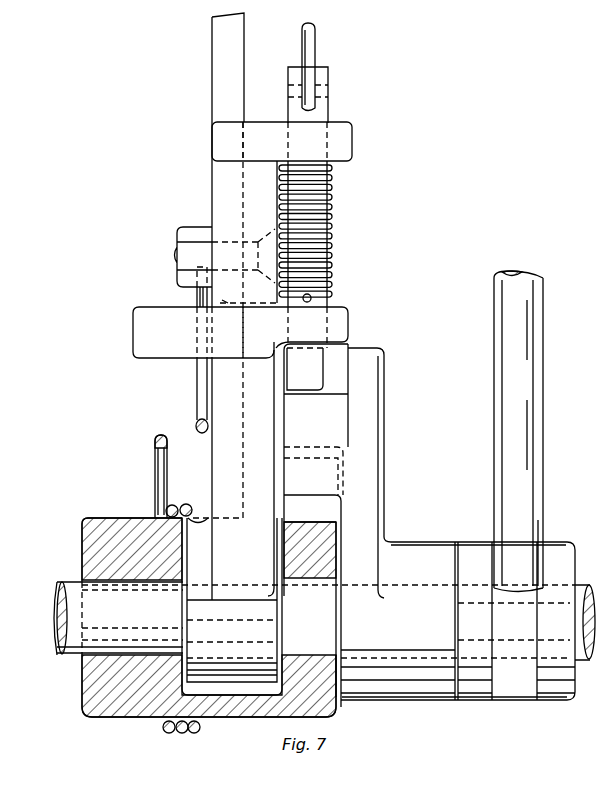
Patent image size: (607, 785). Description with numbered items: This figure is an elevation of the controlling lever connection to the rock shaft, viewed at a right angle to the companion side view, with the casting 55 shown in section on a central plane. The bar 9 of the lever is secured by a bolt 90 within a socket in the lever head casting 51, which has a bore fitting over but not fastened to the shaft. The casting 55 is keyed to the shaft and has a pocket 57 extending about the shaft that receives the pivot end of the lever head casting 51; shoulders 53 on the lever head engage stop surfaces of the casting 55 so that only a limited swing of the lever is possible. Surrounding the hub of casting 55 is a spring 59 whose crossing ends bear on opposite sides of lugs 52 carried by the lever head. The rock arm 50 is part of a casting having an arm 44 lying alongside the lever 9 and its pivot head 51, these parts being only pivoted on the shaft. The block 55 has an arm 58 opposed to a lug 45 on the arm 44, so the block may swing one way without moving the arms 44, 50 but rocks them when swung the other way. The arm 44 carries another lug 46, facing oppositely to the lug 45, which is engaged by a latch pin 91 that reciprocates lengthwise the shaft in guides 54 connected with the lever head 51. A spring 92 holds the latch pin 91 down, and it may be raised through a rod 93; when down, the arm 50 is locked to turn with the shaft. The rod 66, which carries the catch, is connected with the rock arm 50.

The bar 9 is at (212, 60).
The rod 93 is at (315, 40).
The guides 54 is at (352, 141).
The spring 92 is at (333, 228).
The bolt 90 is at (176, 253).
The lugs 52 is at (133, 328).
The lever head casting 51 is at (241, 462).
The arm 44 is at (384, 491).
The lug 46 is at (336, 378).
The latch pin 91 is at (305, 369).
The lug 45 is at (313, 471).
The arm 58 is at (312, 601).
The casting 55 is at (92, 542).
The shoulders 53 is at (223, 598).
The pocket 57 is at (233, 690).
The rock arm 50 is at (518, 695).
The rod 66 is at (508, 451).
The spring 59 is at (167, 451).